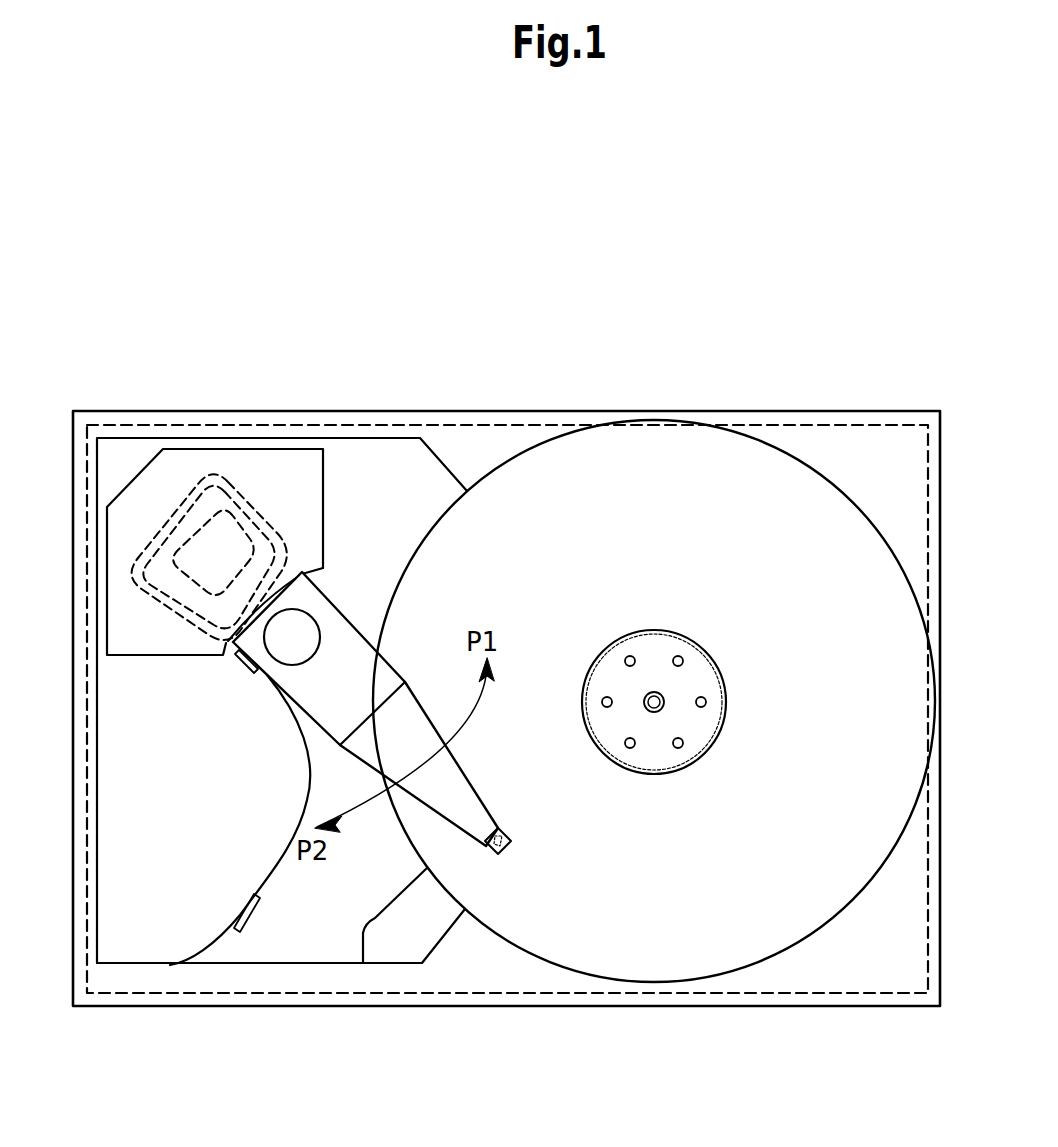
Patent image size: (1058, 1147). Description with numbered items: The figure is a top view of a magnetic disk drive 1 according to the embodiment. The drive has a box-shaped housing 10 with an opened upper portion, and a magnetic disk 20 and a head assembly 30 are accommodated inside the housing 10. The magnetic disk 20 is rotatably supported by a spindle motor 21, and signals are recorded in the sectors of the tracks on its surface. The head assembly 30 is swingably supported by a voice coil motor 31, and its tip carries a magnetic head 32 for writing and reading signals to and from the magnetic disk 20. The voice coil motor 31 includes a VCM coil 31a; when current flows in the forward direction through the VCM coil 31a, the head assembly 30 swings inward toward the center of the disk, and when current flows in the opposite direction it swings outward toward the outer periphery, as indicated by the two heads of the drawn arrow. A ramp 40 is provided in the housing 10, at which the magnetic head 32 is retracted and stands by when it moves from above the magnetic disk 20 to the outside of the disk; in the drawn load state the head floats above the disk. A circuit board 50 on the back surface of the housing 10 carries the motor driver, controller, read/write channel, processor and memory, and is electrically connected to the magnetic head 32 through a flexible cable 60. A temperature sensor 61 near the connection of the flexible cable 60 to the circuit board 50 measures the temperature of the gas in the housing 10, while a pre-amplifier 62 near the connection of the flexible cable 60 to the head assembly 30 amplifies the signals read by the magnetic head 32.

The magnetic disk drive 1 is at (553, 300).
The housing 10 is at (852, 412).
The magnetic disk 20 is at (545, 467).
The spindle motor 21 is at (653, 657).
The head assembly 30 is at (353, 667).
The voice coil motor 31 is at (298, 570).
The VCM coil 31a is at (223, 467).
The magnetic head 32 is at (493, 857).
The ramp 40 is at (417, 913).
The circuit board 50 is at (132, 425).
The flexible cable 60 is at (280, 870).
The temperature sensor 61 is at (248, 914).
The pre-amplifier 62 is at (242, 667).